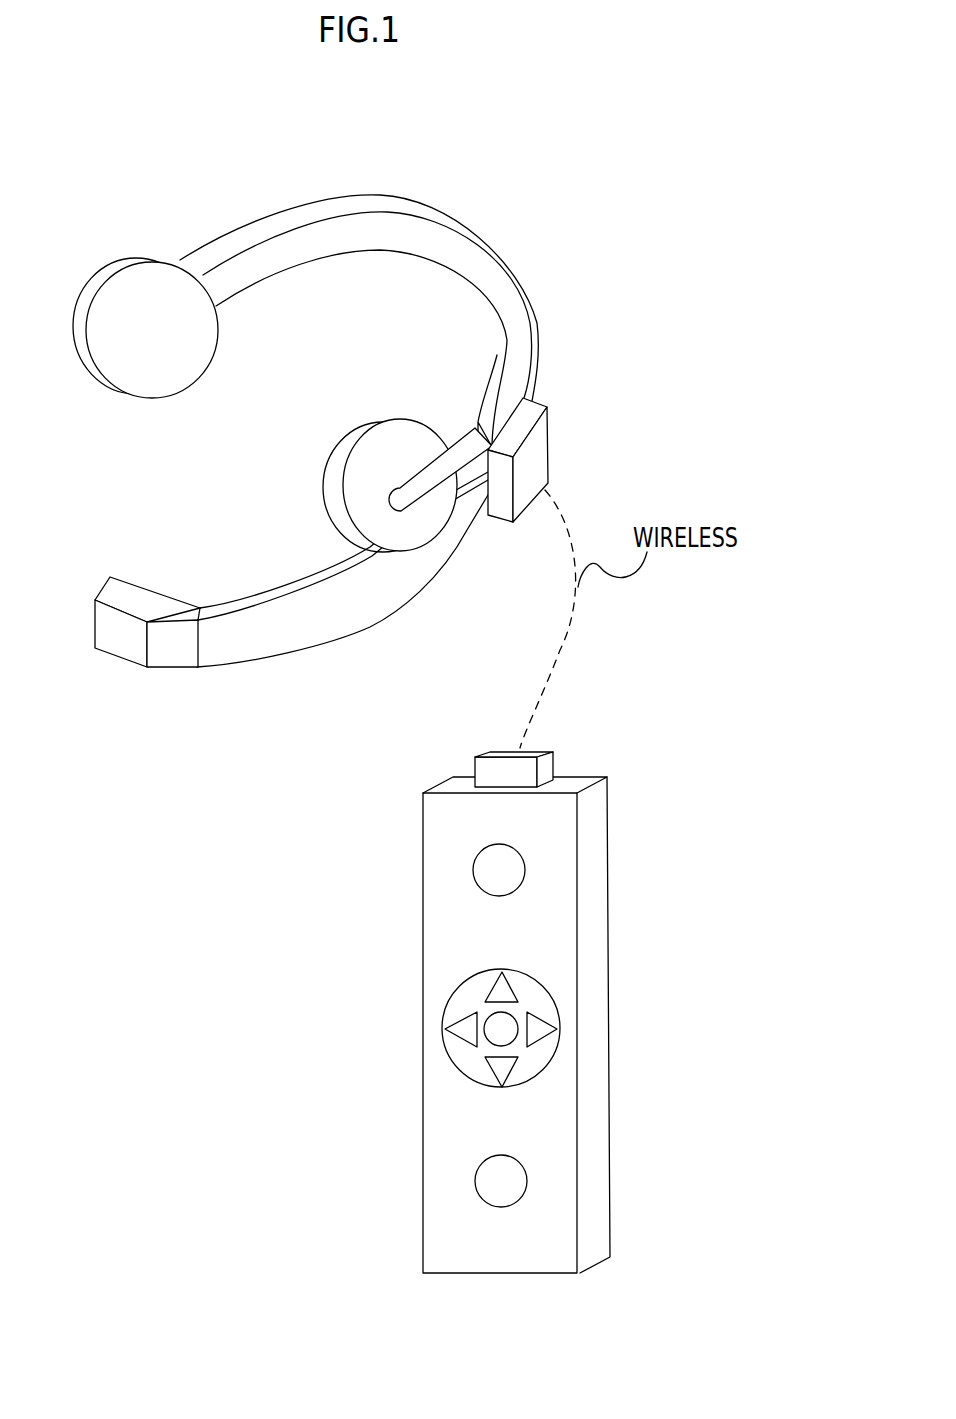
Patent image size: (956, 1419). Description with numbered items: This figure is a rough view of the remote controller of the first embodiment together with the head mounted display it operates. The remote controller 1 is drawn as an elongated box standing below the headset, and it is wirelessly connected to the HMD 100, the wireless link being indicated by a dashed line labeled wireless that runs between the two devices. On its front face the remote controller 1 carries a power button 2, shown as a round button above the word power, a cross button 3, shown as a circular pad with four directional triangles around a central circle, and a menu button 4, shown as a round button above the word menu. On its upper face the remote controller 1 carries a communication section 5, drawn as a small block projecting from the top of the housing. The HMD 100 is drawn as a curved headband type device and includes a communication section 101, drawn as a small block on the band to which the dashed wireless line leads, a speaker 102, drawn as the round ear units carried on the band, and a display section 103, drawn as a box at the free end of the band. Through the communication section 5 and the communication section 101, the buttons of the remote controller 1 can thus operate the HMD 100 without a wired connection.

The HMD 100 is at (160, 222).
The communication section 101 is at (545, 442).
The speaker 102 is at (367, 432).
The display section 103 is at (172, 660).
The remote controller 1 is at (613, 1310).
The power button 2 is at (523, 863).
The cross button 3 is at (542, 980).
The menu button 4 is at (525, 1172).
The communication section 5 is at (553, 763).